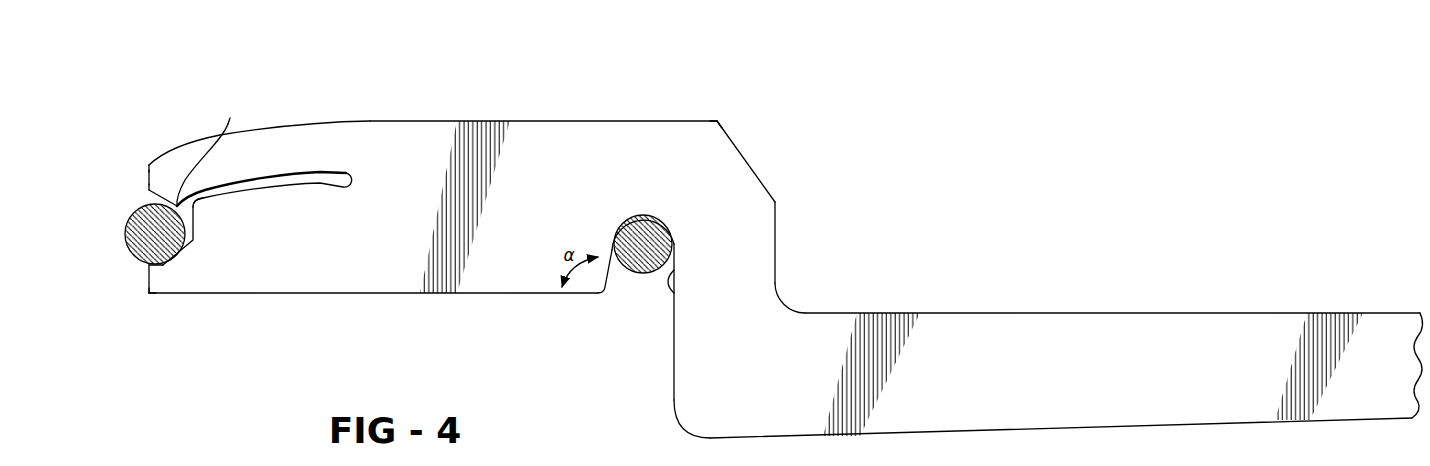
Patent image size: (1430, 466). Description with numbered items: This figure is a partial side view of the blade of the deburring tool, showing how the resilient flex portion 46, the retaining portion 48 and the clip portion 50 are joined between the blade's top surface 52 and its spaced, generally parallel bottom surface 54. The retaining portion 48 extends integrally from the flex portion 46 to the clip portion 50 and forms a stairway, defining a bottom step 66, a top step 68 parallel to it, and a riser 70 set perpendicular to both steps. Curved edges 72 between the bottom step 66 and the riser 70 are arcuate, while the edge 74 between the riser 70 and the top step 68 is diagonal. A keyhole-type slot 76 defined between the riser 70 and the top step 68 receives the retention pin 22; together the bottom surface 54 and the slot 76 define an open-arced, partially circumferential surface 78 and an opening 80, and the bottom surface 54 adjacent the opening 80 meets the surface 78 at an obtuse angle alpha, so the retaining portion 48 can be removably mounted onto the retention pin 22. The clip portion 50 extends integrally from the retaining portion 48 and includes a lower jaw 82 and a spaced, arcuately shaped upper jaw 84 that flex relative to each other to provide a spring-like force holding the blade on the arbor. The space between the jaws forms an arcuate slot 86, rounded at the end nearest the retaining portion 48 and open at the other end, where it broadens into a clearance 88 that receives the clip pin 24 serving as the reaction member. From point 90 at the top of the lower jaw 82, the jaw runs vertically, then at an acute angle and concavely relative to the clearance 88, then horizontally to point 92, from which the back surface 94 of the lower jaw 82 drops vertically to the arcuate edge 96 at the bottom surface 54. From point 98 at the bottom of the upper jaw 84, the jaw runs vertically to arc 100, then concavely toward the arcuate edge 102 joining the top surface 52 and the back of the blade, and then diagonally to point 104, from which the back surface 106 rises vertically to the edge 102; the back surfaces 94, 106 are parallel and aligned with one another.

The retention pin 22 is at (630, 277).
The clip pin 24 is at (128, 256).
The resilient flex portion 46 is at (1138, 280).
The retaining portion 48 is at (601, 114).
The clip portion 50 is at (186, 108).
The top surface 52 is at (452, 120).
The bottom surface 54 is at (412, 293).
The bottom step 66 is at (837, 327).
The top step 68 is at (678, 127).
The riser 70 is at (777, 222).
The curved edges 72 is at (790, 303).
The edge 74 is at (752, 180).
The keyhole-type slot 76 is at (604, 287).
The partially circumferential surface 78 is at (620, 222).
The opening 80 is at (642, 276).
The lower jaw 82 is at (187, 283).
The upper jaw 84 is at (160, 155).
The arcuate slot 86 is at (290, 181).
The clearance 88 is at (192, 238).
The point 90 is at (203, 200).
The point 92 is at (126, 237).
The back surface 94 is at (146, 287).
The edge 96 is at (148, 296).
The point 98 is at (230, 118).
The arc 100 is at (140, 210).
The edge 102 is at (149, 165).
The point 104 is at (148, 190).
The back surface 106 is at (149, 167).